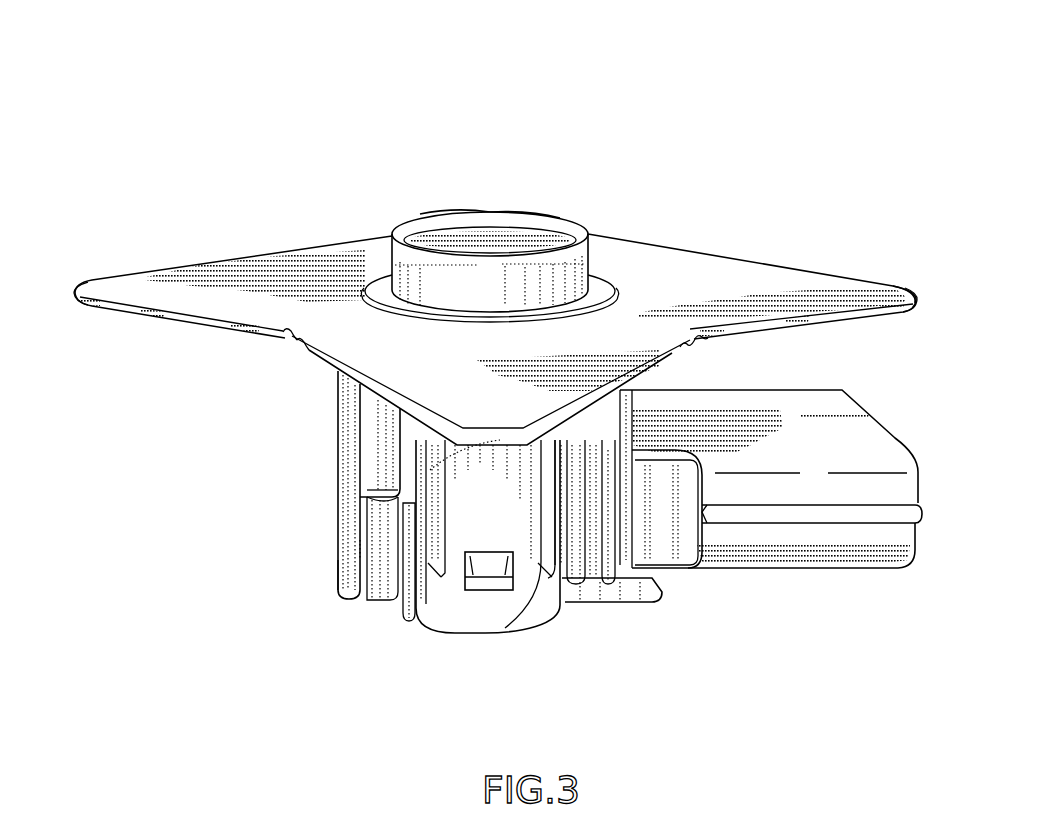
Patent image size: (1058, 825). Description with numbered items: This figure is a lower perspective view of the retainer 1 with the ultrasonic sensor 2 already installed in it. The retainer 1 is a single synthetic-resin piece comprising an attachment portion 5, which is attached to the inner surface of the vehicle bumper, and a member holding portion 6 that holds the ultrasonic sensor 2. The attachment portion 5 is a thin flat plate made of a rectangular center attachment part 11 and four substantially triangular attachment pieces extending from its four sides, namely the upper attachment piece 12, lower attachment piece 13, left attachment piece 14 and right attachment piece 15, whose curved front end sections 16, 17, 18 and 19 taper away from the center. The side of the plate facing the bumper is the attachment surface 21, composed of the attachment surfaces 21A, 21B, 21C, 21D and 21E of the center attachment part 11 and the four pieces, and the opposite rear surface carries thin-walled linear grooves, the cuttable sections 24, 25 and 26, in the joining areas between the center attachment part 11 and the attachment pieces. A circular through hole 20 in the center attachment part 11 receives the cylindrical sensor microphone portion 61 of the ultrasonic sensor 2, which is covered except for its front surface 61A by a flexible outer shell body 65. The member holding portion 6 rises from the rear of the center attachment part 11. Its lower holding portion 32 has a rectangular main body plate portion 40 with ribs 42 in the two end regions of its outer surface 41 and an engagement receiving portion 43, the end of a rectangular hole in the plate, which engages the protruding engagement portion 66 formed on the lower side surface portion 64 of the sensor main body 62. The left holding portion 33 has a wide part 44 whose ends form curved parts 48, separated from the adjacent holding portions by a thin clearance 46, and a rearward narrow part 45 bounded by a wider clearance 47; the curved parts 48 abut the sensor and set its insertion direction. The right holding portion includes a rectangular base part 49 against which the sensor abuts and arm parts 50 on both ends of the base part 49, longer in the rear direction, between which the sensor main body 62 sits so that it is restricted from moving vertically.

The retainer 1 is at (768, 86).
The ultrasonic sensor 2 is at (788, 539).
The attachment portion 5 is at (696, 242).
The member holding portion 6 is at (567, 592).
The center attachment part 11 is at (448, 269).
The upper attachment piece 12 is at (420, 154).
The lower attachment piece 13 is at (431, 401).
The left attachment piece 14 is at (233, 216).
The right attachment piece 15 is at (802, 211).
The front end section 16 is at (503, 213).
The front end section 17 is at (355, 545).
The front end section 18 is at (74, 296).
The front end section 19 is at (917, 296).
The through hole 20 is at (608, 262).
The attachment surface 21 is at (652, 272).
The attachment surface 21A is at (365, 265).
The attachment surface 21B is at (447, 215).
The attachment surface 21C is at (475, 378).
The attachment surface 21D is at (150, 280).
The attachment surface 21E is at (801, 300).
The cuttable section 24 is at (298, 344).
The cuttable section 25 is at (285, 334).
The cuttable section 26 is at (702, 340).
The lower holding portion 32 is at (515, 615).
The left holding portion 33 is at (340, 588).
The main body plate portion 40 is at (488, 577).
The outer surface 41 is at (482, 605).
The rib 42 is at (395, 606).
The engagement receiving portion 43 is at (545, 600).
The wide part 44 is at (350, 397).
The narrow part 45 is at (343, 578).
The clearance 46 is at (400, 447).
The clearance 47 is at (342, 595).
The curved part 48 is at (375, 482).
The base part 49 is at (690, 416).
The arm part 50 is at (658, 545).
The sensor microphone portion 61 is at (489, 203).
The front surface 61A is at (545, 240).
The sensor main body 62 is at (865, 430).
The lower side surface portion 64 is at (683, 575).
The outer shell body 65 is at (410, 270).
The engagement portion 66 is at (470, 582).